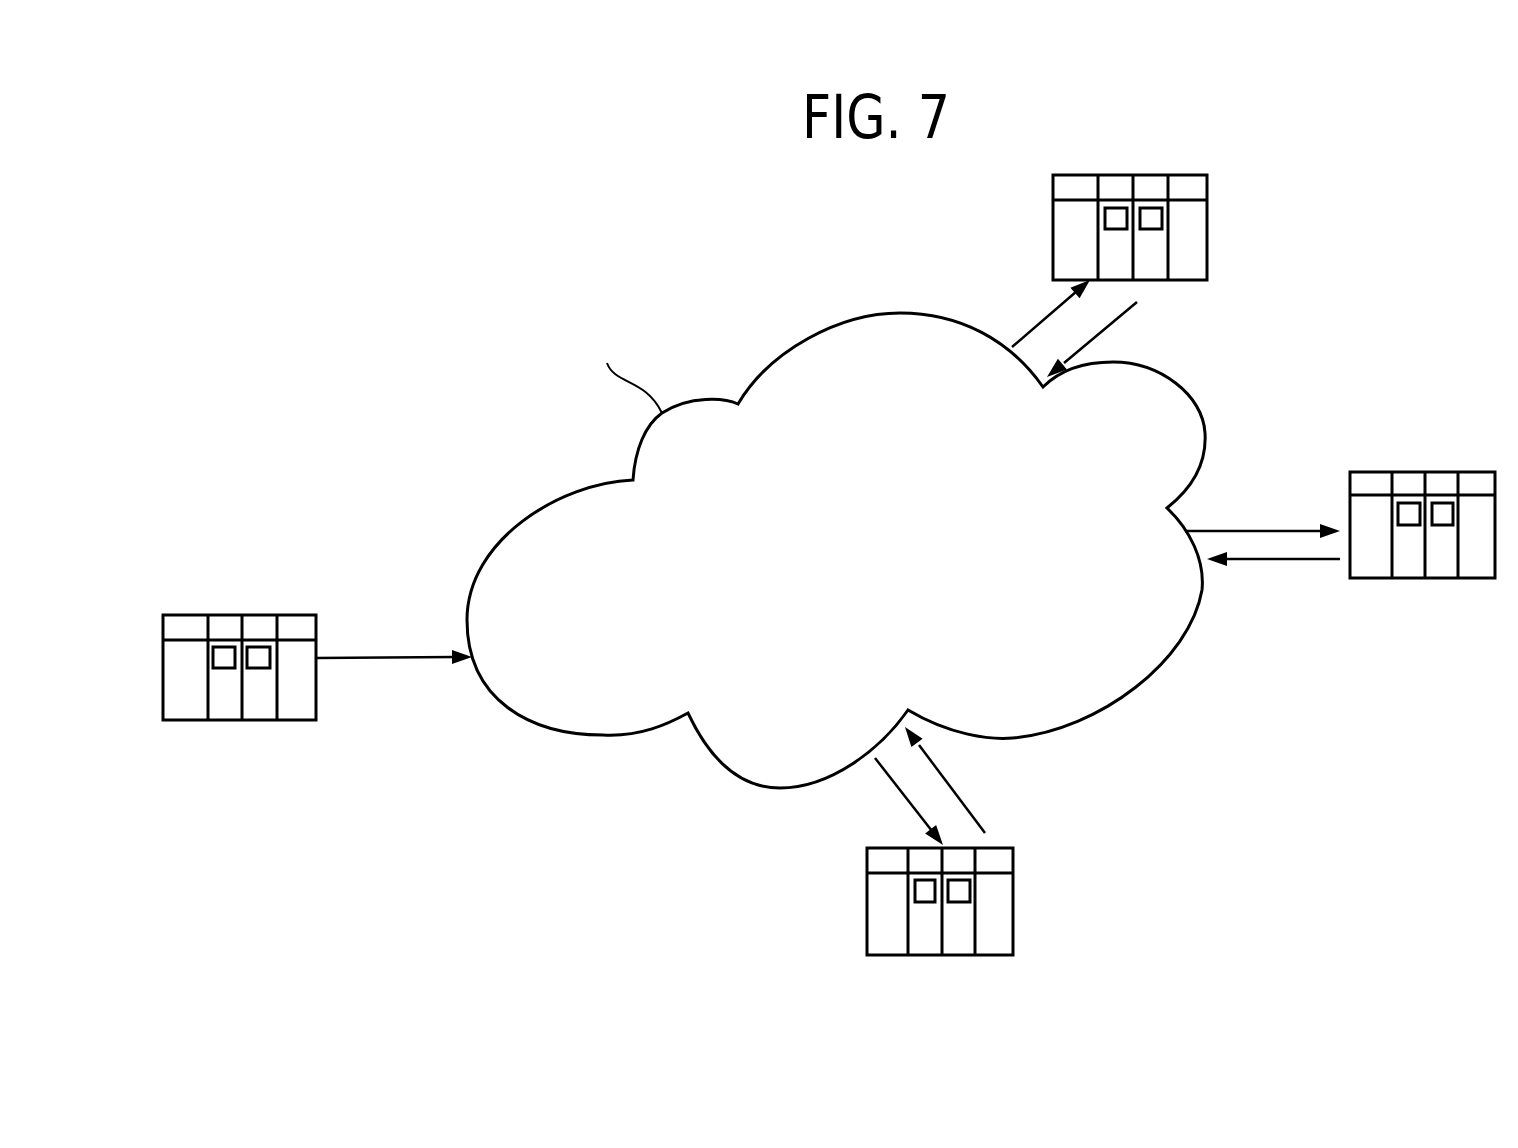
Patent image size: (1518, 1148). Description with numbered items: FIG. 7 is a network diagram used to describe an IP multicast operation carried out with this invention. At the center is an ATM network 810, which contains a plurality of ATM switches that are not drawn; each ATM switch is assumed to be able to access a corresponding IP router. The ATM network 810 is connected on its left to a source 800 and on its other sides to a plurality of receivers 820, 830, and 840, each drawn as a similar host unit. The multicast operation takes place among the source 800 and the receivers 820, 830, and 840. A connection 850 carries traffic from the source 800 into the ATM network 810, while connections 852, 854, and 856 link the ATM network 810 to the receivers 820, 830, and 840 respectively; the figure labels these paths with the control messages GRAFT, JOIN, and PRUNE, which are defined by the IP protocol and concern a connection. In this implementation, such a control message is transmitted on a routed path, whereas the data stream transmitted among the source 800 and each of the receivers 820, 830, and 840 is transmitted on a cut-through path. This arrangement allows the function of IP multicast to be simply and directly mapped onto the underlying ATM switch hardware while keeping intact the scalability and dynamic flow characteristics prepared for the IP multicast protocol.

The source 800 is at (182, 720).
The ATM network 810 is at (885, 567).
The receiver 820 is at (1207, 187).
The receiver 830 is at (1408, 578).
The receiver 840 is at (1015, 888).
The link from source host to ATM network 850 is at (392, 658).
The link between ATM network and receiver host 820 852 is at (1105, 328).
The link between ATM network and receiver host 830 854 is at (1262, 548).
The link between ATM network and receiver host 840 856 is at (952, 786).